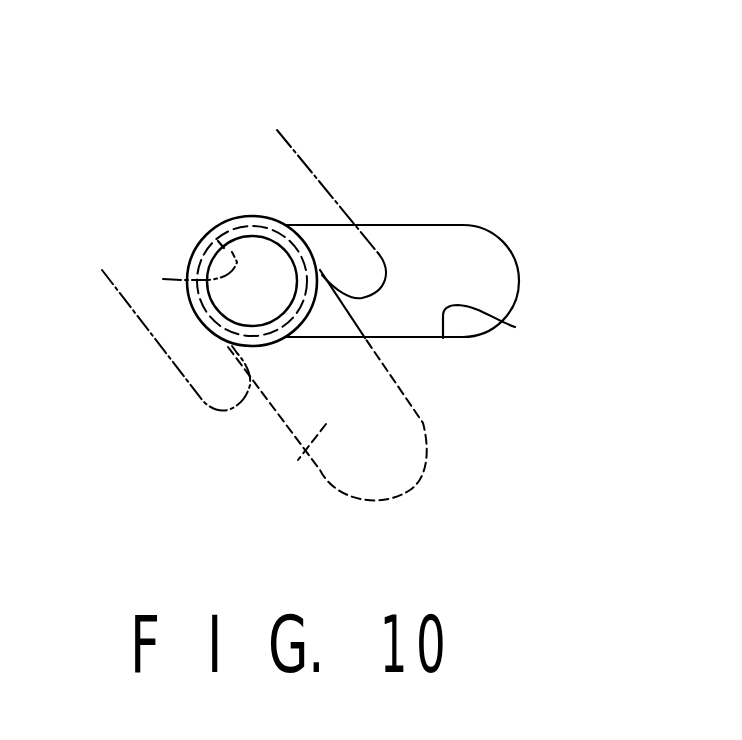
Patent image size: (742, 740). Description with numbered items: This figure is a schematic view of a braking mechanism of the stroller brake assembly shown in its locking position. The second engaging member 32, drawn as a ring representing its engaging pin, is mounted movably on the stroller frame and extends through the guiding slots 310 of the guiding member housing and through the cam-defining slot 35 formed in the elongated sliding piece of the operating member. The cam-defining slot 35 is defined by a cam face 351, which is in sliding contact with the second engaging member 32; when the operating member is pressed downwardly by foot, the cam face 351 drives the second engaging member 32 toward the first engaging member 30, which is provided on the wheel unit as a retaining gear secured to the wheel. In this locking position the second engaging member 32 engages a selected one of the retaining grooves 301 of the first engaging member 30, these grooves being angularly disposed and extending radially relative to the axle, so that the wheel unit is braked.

The first engaging member 30 is at (173, 363).
The retaining grooves 301 is at (163, 279).
The guiding slots 310 is at (305, 454).
The second engaging member 32 is at (267, 274).
The cam-defining slot 35 is at (518, 283).
The cam face 351 is at (515, 327).